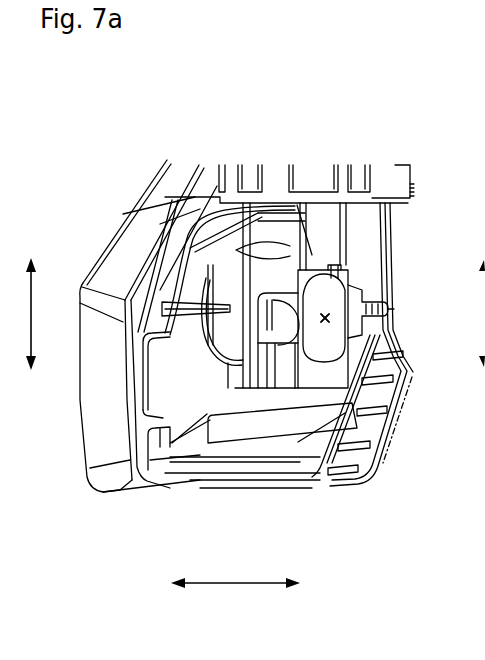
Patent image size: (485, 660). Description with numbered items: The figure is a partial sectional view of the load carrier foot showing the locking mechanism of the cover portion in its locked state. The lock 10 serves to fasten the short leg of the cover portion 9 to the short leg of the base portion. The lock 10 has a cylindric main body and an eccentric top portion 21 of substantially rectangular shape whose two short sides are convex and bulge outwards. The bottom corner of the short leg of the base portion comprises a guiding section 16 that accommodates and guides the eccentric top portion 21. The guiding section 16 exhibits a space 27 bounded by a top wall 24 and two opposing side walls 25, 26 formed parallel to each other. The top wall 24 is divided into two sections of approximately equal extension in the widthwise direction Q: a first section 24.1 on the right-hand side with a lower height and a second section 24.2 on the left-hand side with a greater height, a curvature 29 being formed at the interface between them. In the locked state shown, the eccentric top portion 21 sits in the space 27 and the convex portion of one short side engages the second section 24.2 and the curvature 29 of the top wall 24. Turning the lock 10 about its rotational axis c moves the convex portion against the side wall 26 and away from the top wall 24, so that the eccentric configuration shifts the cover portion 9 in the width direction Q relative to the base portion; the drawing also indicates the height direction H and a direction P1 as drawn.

The cover portion 9 is at (130, 242).
The lock 10 is at (398, 184).
The guiding section 16 is at (267, 249).
The top wall 24 is at (277, 272).
The first section 24.1 is at (277, 292).
The second section 24.2 is at (335, 267).
The eccentric top portion 21 is at (337, 303).
The curvature 29 is at (325, 316).
The rotational axis c is at (337, 302).
The side wall 26 is at (353, 328).
The space 27 is at (313, 370).
The side wall 25 is at (252, 342).
The direction arrow P1 is at (307, 376).
The height direction H is at (40, 314).
The widthwise direction Q is at (235, 596).